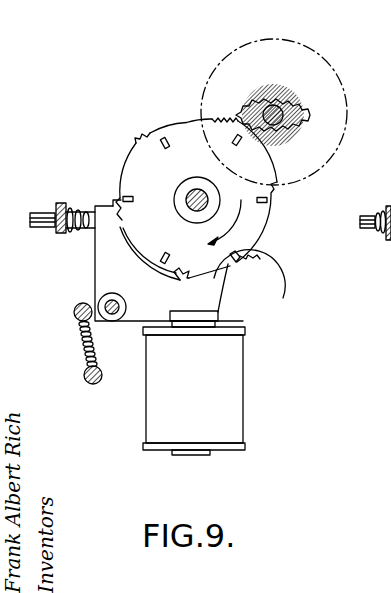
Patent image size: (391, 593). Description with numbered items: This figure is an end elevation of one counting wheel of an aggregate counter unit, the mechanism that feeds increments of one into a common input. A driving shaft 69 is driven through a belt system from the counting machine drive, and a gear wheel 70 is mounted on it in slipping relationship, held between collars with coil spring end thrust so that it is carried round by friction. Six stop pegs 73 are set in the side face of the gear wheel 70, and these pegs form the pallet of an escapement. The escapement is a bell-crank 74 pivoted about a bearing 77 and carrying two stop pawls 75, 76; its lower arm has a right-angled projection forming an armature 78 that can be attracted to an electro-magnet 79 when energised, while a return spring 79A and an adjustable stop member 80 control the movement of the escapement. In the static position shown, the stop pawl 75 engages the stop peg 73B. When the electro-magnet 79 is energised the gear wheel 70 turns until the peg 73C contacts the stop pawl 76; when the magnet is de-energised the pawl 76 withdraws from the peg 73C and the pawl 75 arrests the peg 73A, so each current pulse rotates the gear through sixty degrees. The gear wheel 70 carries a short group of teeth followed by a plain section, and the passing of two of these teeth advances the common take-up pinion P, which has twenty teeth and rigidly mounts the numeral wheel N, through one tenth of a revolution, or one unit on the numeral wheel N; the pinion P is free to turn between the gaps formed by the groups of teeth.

The gear wheel 70 is at (183, 179).
The driving shaft 69 is at (208, 204).
The stop pegs 73 is at (127, 196).
The stop peg 73A is at (268, 200).
The stop peg 73B is at (238, 256).
The stop peg 73C is at (163, 252).
The stop pawl 76 is at (118, 208).
The take-up pinion P is at (302, 93).
The numeral wheel N is at (338, 118).
The bell-crank 74 is at (97, 268).
The adjustable stop member 80 is at (90, 226).
The stop pawl 75 is at (228, 270).
The armature 78 is at (218, 319).
The electro-magnet 79 is at (198, 397).
The bearing 77 is at (114, 321).
The return spring 79A is at (82, 347).